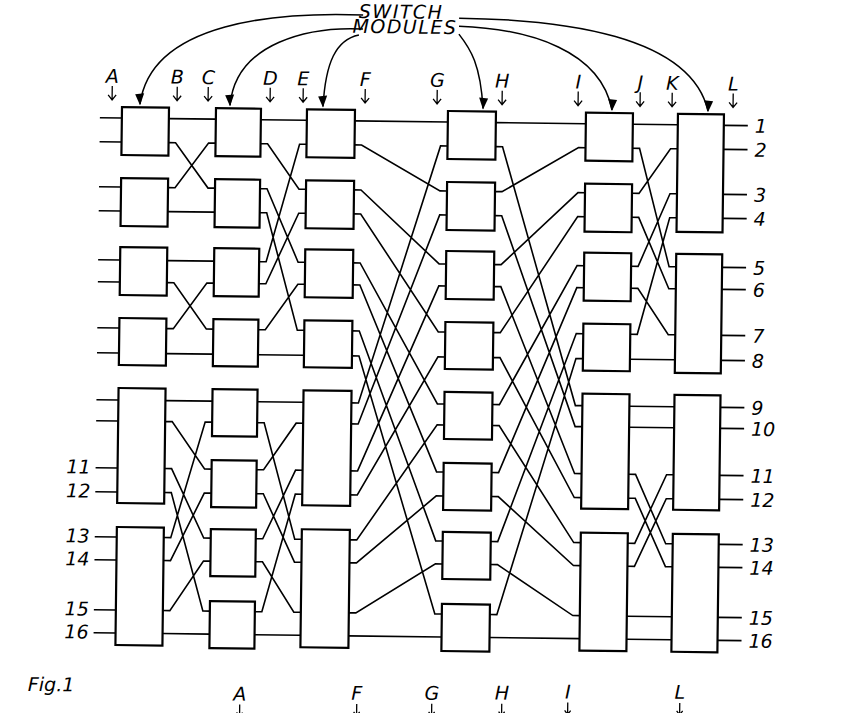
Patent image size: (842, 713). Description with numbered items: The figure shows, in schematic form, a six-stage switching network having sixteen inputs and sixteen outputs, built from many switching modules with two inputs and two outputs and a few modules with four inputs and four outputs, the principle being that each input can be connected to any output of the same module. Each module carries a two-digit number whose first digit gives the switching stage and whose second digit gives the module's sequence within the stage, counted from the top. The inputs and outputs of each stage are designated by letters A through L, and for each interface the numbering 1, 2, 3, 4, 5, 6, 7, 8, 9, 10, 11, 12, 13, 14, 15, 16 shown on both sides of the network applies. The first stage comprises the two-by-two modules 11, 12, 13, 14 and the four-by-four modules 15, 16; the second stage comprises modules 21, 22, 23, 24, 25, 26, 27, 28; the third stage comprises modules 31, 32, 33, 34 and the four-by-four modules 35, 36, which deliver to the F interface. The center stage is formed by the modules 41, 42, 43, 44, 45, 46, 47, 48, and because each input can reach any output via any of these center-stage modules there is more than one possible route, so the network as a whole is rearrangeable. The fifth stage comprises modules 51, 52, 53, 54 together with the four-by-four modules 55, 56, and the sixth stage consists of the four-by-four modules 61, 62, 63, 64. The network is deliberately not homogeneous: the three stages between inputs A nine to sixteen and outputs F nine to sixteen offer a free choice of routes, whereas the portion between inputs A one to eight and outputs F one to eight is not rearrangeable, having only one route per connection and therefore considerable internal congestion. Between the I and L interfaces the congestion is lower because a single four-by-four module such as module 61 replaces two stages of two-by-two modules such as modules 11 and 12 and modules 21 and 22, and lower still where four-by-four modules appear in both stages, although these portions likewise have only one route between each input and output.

The input/output number 1 is at (102, 117).
The input/output number 2 is at (101, 141).
The input/output number 3 is at (101, 186).
The input/output number 4 is at (101, 210).
The input/output number 5 is at (100, 259).
The input/output number 6 is at (100, 281).
The input/output number 7 is at (99, 327).
The input/output number 8 is at (99, 352).
The input/output number 9 is at (98, 399).
The input/output number 10 is at (92, 419).
The switching module 11 is at (145, 131).
The switching module 12 is at (145, 202).
The switching module 13 is at (144, 271).
The switching module 14 is at (143, 342).
The switching module 15 is at (141, 446).
The switching module 16 is at (139, 586).
The switching module 21 is at (238, 132).
The switching module 22 is at (238, 203).
The switching module 23 is at (237, 272).
The switching module 24 is at (236, 343).
The switching module 25 is at (235, 413).
The switching module 26 is at (234, 484).
The switching module 27 is at (233, 553).
The switching module 28 is at (232, 625).
The switching module 31 is at (330, 133).
The switching module 32 is at (330, 204).
The switching module 33 is at (329, 273).
The switching module 34 is at (328, 344).
The switching module 35 is at (326, 448).
The switching module 36 is at (324, 588).
The switching module 41 is at (471, 135).
The switching module 42 is at (471, 206).
The switching module 43 is at (470, 275).
The switching module 44 is at (469, 346).
The switching module 45 is at (468, 416).
The switching module 46 is at (467, 487).
The switching module 47 is at (466, 556).
The switching module 48 is at (465, 628).
The switching module 51 is at (609, 137).
The switching module 52 is at (609, 208).
The switching module 53 is at (608, 277).
The switching module 54 is at (607, 348).
The switching module 55 is at (605, 452).
The switching module 56 is at (603, 592).
The switching module 61 is at (700, 173).
The switching module 62 is at (698, 314).
The switching module 63 is at (696, 453).
The switching module 64 is at (694, 593).